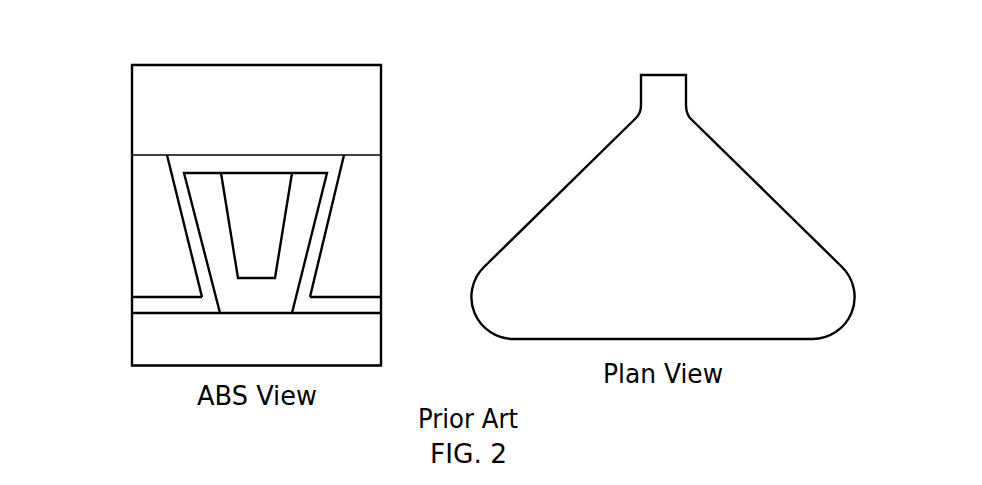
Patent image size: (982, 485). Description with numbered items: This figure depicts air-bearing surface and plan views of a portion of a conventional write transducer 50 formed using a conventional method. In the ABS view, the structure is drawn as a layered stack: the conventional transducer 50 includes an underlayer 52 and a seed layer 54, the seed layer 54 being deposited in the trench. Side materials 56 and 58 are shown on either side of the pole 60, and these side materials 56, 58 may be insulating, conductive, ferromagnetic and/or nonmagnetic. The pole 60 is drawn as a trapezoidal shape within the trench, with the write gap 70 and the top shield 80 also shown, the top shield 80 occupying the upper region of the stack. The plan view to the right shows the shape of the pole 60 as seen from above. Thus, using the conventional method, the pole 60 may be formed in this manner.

The conventional transducer 50 is at (454, 44).
The underlayer 52 is at (132, 332).
The seed layer 54 is at (307, 262).
The side material 56 is at (381, 185).
The side material 58 is at (132, 223).
The pole 60 is at (238, 172).
The write gap 70 is at (132, 303).
The top shield 80 is at (132, 98).